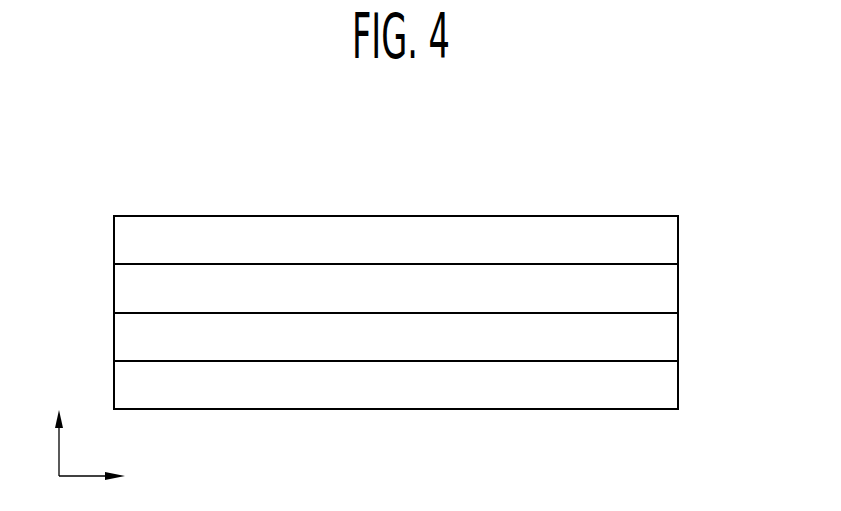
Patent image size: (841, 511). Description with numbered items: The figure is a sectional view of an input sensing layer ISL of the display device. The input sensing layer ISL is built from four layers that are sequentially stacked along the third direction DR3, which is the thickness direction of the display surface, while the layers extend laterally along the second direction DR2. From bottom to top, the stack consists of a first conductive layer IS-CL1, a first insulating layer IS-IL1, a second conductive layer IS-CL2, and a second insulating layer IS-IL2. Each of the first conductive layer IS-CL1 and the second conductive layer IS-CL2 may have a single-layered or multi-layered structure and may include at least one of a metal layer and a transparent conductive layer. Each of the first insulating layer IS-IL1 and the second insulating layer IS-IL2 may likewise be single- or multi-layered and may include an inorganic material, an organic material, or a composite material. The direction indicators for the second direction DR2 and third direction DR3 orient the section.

The input sensing layer ISL is at (687, 153).
The second insulating layer IS-IL2 is at (672, 243).
The second conductive layer IS-CL2 is at (672, 290).
The first insulating layer IS-IL1 is at (672, 338).
The first conductive layer IS-CL1 is at (672, 385).
The third direction DR3 is at (59, 428).
The second direction DR2 is at (113, 477).